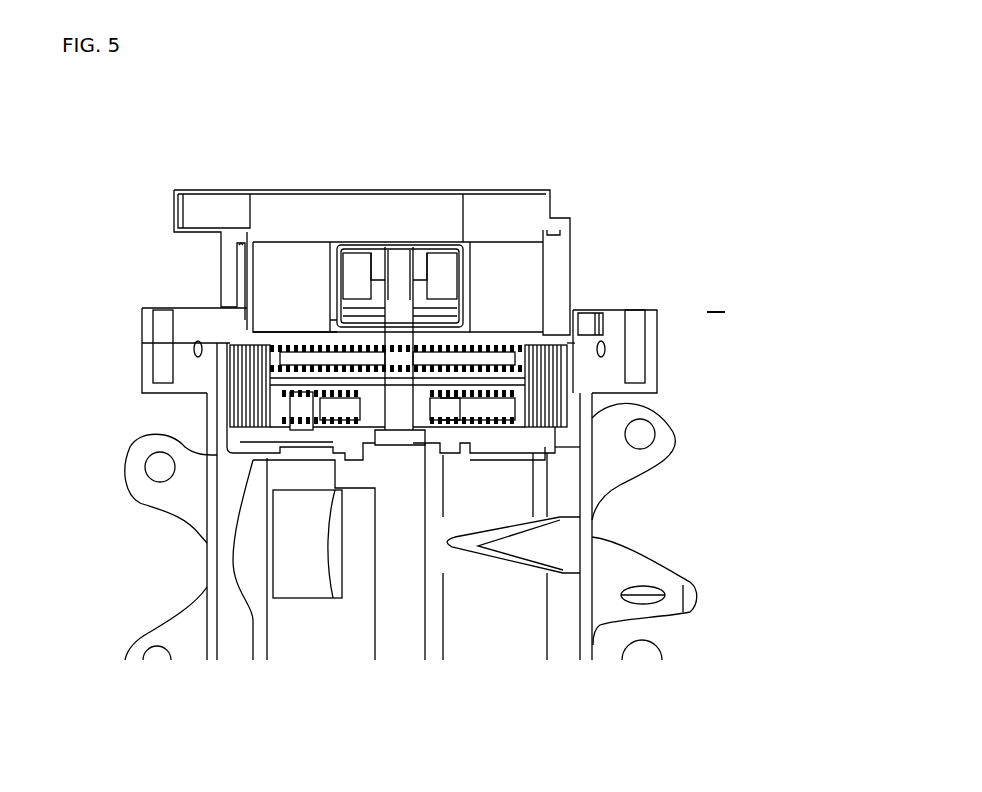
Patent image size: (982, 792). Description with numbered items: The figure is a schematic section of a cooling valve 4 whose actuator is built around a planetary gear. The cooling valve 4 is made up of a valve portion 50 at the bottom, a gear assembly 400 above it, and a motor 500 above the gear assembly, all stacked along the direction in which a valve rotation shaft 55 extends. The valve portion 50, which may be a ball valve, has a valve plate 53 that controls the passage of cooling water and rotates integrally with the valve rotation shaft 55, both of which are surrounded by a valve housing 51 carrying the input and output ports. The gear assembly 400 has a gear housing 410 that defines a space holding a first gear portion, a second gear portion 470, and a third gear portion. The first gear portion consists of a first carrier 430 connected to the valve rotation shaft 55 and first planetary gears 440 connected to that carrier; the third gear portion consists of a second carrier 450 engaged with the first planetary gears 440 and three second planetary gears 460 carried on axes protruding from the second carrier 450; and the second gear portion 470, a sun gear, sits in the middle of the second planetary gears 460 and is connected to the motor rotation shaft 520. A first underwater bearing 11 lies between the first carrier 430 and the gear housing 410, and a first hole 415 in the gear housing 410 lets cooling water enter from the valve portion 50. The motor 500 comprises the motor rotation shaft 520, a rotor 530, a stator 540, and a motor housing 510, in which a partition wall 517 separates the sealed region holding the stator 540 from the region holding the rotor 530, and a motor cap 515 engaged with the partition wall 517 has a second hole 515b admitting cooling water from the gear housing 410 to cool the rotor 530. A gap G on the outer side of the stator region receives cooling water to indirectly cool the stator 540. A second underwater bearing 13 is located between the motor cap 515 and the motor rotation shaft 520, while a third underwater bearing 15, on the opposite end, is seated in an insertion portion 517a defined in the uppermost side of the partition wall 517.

The motor housing 510 is at (278, 192).
The insertion portion 517a is at (393, 255).
The partition wall 517 is at (362, 248).
The motor rotation shaft 520 is at (420, 260).
The third underwater bearing 15 is at (445, 258).
The rotor 530 is at (470, 247).
The motor 500 is at (573, 196).
The gap G is at (238, 271).
The stator 540 is at (537, 256).
The second underwater bearing 13 is at (505, 298).
The second hole 515b is at (358, 330).
The motor cap 515 is at (453, 336).
The cooling valve 4 is at (716, 300).
The second gear portion 470 is at (228, 333).
The second planetary gears 460 is at (233, 358).
The gear assembly 400 is at (596, 372).
The second carrier 450 is at (273, 388).
The first planetary gears 440 is at (595, 420).
The first carrier 430 is at (273, 433).
The valve portion 50 is at (677, 447).
The gear housing 410 is at (573, 433).
The first hole 415 is at (290, 452).
The valve housing 51 is at (597, 503).
The valve plate 53 is at (590, 540).
The valve rotation shaft 55 is at (377, 584).
The first underwater bearing 11 is at (428, 475).